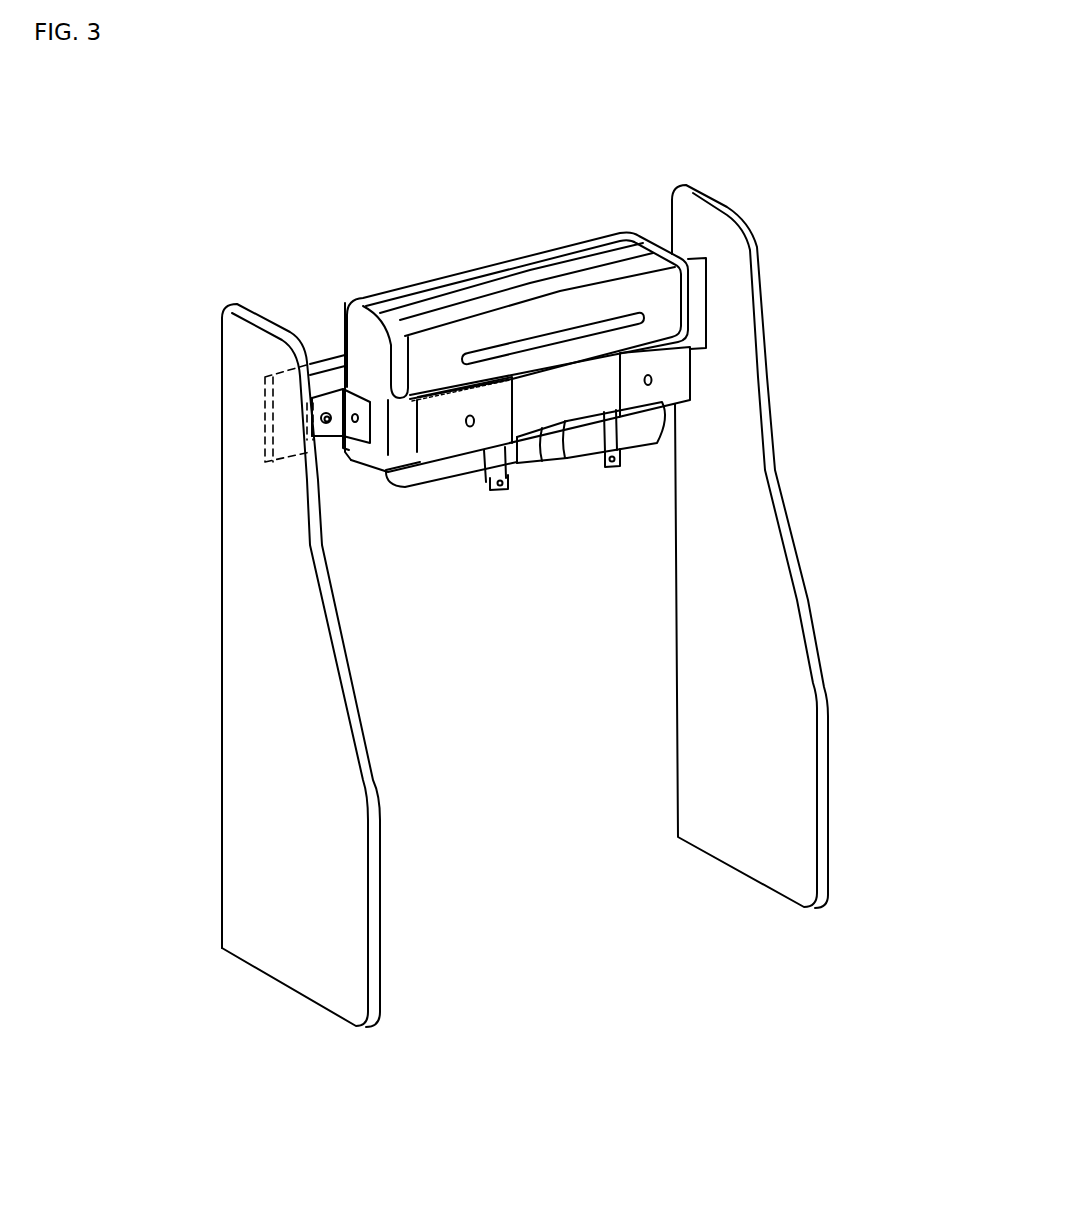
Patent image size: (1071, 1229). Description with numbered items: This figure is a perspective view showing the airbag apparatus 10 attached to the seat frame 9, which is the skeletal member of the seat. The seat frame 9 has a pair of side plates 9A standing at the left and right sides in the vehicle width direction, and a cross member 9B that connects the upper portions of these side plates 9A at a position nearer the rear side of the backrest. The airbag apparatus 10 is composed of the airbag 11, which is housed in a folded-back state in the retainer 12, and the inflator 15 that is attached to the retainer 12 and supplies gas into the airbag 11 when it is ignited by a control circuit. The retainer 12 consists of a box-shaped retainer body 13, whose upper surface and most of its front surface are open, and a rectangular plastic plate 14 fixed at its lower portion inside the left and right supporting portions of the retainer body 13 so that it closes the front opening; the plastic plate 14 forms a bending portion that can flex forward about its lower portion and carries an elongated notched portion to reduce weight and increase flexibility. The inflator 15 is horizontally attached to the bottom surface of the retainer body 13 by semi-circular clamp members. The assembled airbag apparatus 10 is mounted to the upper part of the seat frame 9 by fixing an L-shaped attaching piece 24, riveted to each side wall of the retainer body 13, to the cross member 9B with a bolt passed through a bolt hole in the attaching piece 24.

The seat frame 9 is at (543, 606).
The side plates 9A is at (252, 880).
The cross member 9B is at (320, 353).
The airbag apparatus 10 is at (525, 334).
The airbag 11 is at (508, 292).
The retainer 12 is at (357, 367).
The retainer body 13 is at (442, 277).
The plastic plate 14 is at (660, 322).
The inflator 15 is at (580, 452).
The attaching piece 24 is at (332, 449).